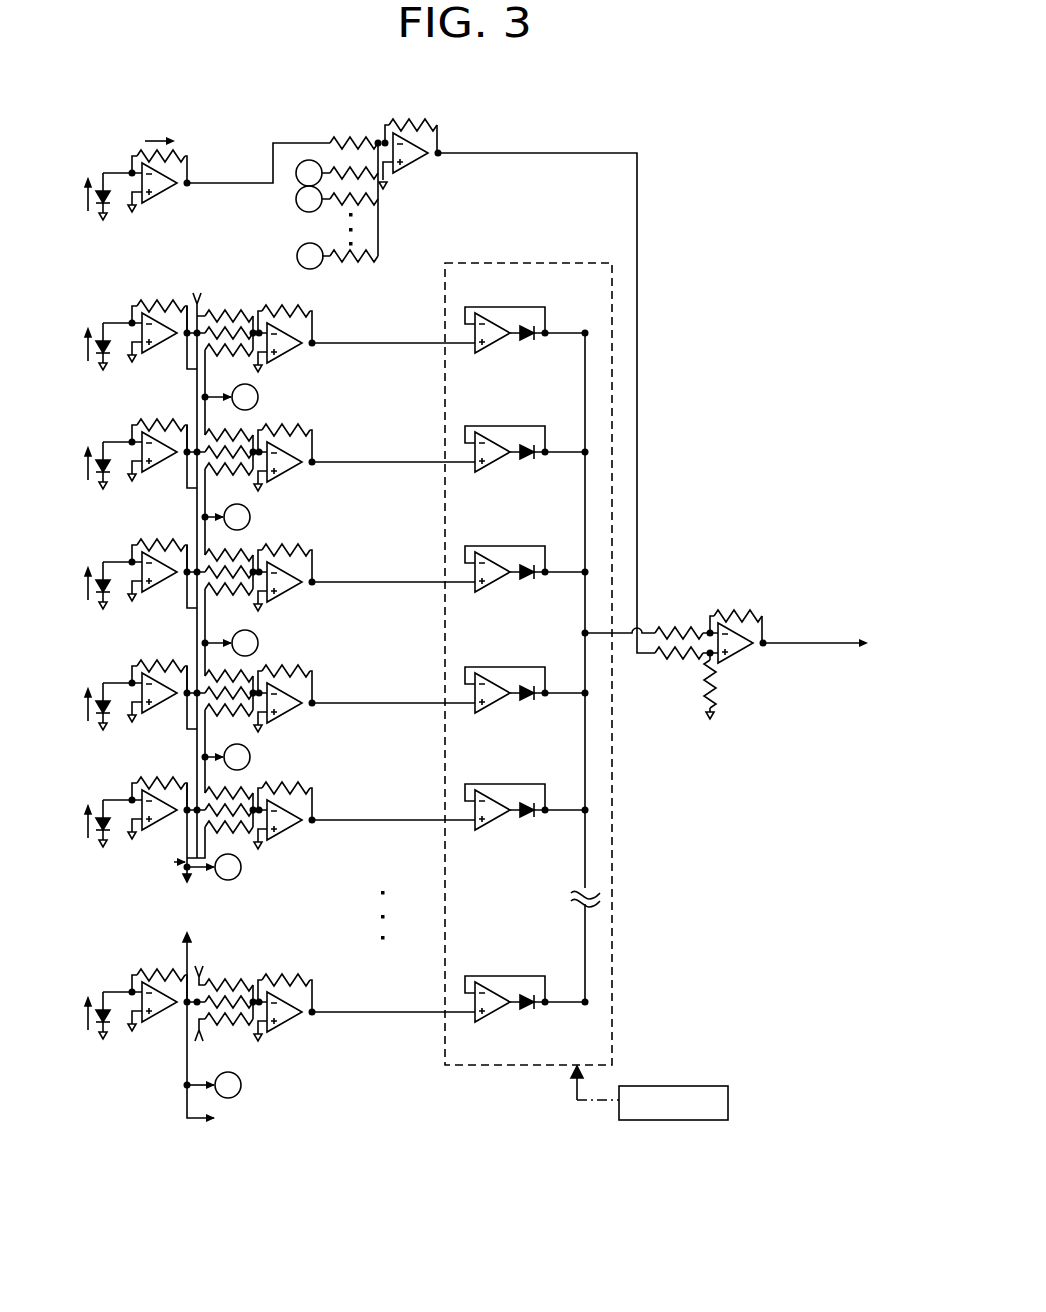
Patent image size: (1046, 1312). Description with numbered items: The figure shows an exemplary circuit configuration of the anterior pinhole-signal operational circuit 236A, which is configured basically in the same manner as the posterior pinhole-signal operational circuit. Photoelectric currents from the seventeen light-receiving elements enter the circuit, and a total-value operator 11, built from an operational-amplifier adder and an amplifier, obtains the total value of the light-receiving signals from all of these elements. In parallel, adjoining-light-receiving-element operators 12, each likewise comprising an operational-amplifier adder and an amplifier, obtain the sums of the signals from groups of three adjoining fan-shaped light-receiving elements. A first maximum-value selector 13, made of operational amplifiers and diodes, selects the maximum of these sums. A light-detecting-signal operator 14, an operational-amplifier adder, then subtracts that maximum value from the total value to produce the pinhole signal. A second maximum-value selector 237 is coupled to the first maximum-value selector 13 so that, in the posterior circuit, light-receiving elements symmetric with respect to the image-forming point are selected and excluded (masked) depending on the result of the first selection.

The total-value operator 11 is at (420, 92).
The adjoining-light-receiving-element operators 12 is at (203, 1172).
The first maximum-value selector 13 is at (523, 1068).
The light-detecting-signal operator 14 is at (750, 728).
The second maximum-value selector 237 is at (673, 1122).
The anterior pinhole-signal operational circuit 236A is at (660, 88).